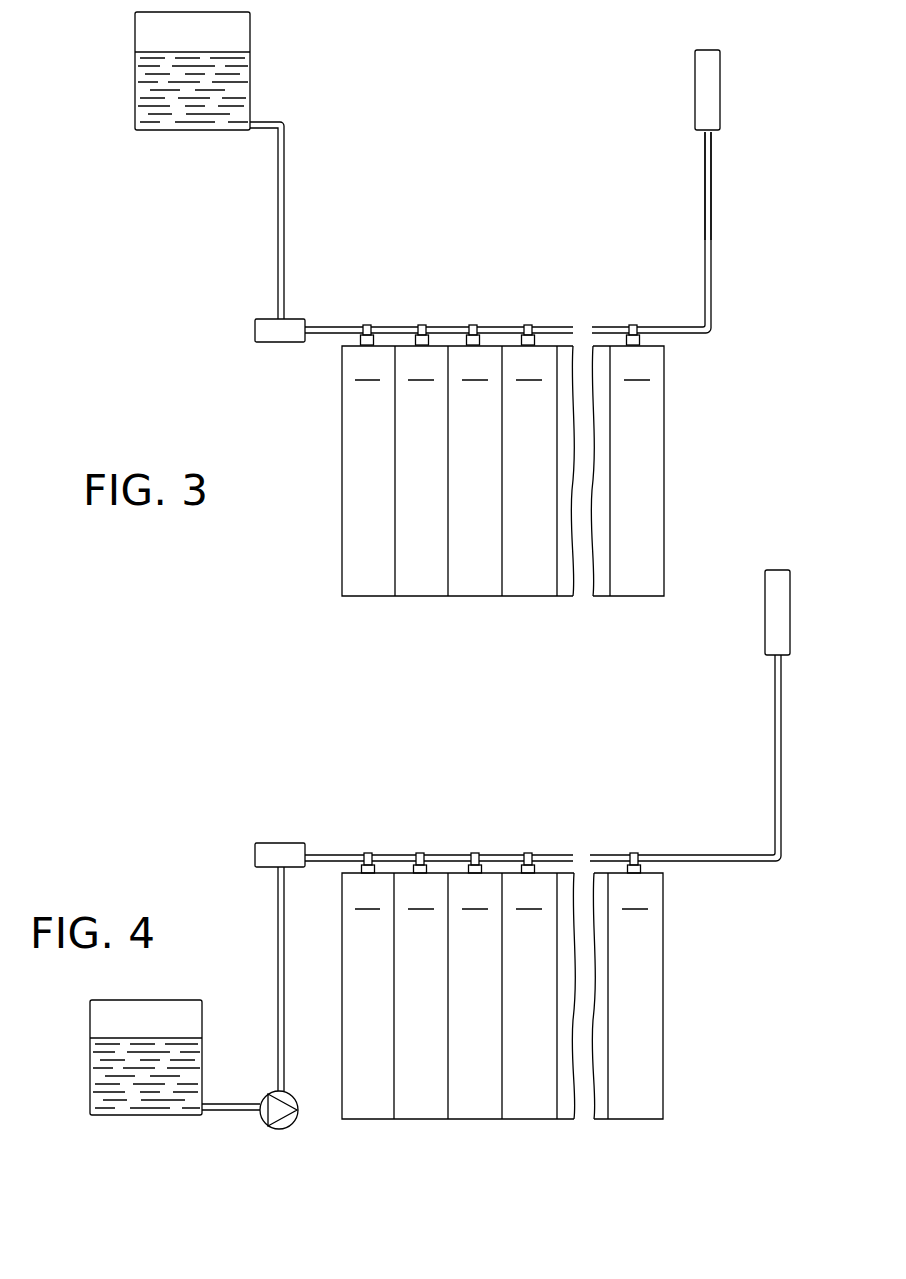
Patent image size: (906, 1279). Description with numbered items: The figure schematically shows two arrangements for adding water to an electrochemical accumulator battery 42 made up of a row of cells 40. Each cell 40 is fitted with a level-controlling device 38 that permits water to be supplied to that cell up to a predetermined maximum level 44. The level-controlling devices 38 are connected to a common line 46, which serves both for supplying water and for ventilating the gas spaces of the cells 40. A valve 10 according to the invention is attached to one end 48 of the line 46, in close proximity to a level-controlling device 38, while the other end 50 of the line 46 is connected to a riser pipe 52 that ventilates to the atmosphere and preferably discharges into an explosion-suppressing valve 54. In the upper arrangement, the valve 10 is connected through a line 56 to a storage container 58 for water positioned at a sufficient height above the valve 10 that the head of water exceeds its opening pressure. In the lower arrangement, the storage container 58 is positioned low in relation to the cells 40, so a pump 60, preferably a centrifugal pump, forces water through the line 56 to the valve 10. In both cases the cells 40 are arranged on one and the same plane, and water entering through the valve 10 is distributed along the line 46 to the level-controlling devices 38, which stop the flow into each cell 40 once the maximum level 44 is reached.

In FIG. 3, the valve 10 is at (254, 330).
In FIG. 4, the valve 10 is at (254, 852).
In FIG. 3, the level-controlling device 38 is at (420, 325).
In FIG. 4, the level-controlling device 38 is at (419, 853).
In FIG. 3, the cell 40 is at (367, 578).
In FIG. 4, the cell 40 is at (368, 1100).
In FIG. 3, the battery 42 is at (340, 555).
In FIG. 4, the battery 42 is at (677, 1076).
In FIG. 3, the maximum level 44 is at (427, 383).
In FIG. 4, the maximum level 44 is at (430, 911).
In FIG. 3, the line 46 is at (448, 327).
In FIG. 4, the line 46 is at (448, 855).
In FIG. 3, the one end of the line 48 is at (335, 327).
In FIG. 4, the one end of the line 48 is at (333, 855).
In FIG. 3, the other end of the line 50 is at (672, 327).
In FIG. 4, the other end of the line 50 is at (708, 855).
In FIG. 3, the riser pipe 52 is at (705, 232).
In FIG. 4, the riser pipe 52 is at (775, 753).
In FIG. 3, the explosion-suppressing valve 54 is at (694, 90).
In FIG. 4, the explosion-suppressing valve 54 is at (764, 610).
In FIG. 3, the line 56 is at (286, 228).
In FIG. 4, the line 56 is at (278, 922).
In FIG. 3, the storage container 58 is at (252, 67).
In FIG. 4, the storage container 58 is at (204, 1038).
In FIG. 4, the pump 60 is at (280, 1131).